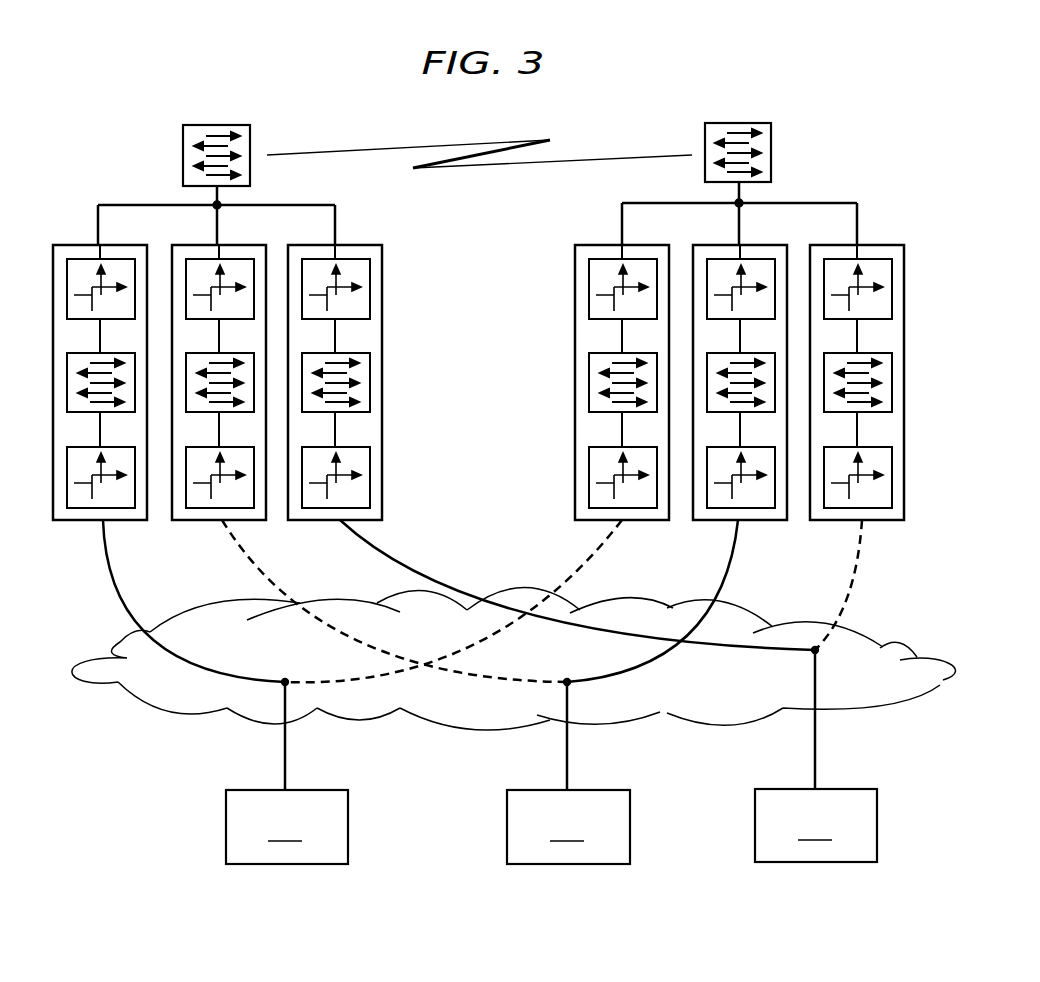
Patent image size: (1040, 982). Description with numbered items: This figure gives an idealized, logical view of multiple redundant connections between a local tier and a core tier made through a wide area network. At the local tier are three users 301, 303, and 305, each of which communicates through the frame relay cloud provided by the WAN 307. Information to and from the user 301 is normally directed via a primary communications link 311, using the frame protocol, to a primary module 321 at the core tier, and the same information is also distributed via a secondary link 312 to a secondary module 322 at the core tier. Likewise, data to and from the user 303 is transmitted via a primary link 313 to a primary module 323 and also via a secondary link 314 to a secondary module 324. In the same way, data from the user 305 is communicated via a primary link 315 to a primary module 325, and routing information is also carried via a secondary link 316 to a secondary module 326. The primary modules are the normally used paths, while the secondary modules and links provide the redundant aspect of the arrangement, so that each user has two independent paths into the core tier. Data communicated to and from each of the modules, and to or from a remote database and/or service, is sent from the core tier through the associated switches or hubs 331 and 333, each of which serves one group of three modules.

The user 301 is at (287, 772).
The user 303 is at (568, 772).
The user 305 is at (816, 755).
The WAN 307 is at (933, 667).
The primary communications link 311 is at (112, 572).
The secondary link 312 is at (594, 555).
The primary link 313 is at (732, 565).
The secondary link 314 is at (262, 563).
The primary link 315 is at (403, 555).
The secondary link 316 is at (850, 578).
The primary module 321 is at (122, 245).
The secondary module 322 is at (643, 245).
The primary module 323 is at (761, 245).
The secondary module 324 is at (240, 245).
The primary module 325 is at (360, 245).
The secondary module 326 is at (882, 245).
The switch or hub 331 is at (203, 125).
The switch or hub 333 is at (725, 123).